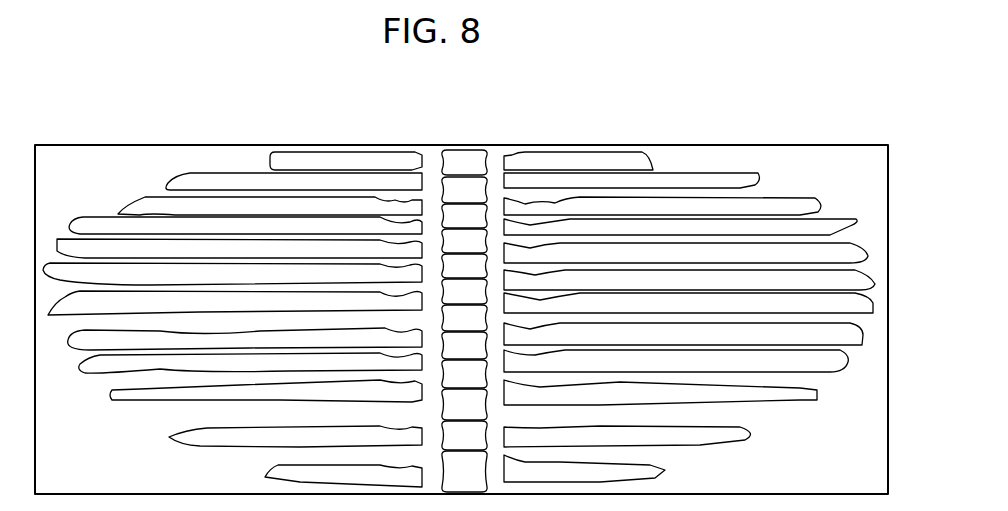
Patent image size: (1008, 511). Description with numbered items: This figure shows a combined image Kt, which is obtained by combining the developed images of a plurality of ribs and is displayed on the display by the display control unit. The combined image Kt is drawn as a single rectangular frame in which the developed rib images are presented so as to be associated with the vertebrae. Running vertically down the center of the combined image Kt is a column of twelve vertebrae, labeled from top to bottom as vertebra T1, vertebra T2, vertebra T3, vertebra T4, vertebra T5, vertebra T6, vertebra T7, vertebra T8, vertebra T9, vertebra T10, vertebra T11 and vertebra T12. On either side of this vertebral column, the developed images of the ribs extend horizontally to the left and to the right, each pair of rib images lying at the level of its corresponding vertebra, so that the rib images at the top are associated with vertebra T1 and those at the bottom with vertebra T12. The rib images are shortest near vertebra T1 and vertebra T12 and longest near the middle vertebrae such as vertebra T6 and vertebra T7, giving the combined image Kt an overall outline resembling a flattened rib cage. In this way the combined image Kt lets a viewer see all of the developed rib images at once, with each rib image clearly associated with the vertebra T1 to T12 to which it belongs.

The combined image Kt is at (785, 146).
The vertebra T1 is at (464, 162).
The vertebra T2 is at (464, 190).
The vertebra T3 is at (464, 216).
The vertebra T4 is at (464, 241).
The vertebra T5 is at (464, 266).
The vertebra T6 is at (464, 292).
The vertebra T7 is at (464, 318).
The vertebra T8 is at (464, 346).
The vertebra T9 is at (464, 374).
The vertebra T10 is at (464, 404).
The vertebra T11 is at (464, 435).
The vertebra T12 is at (464, 471).